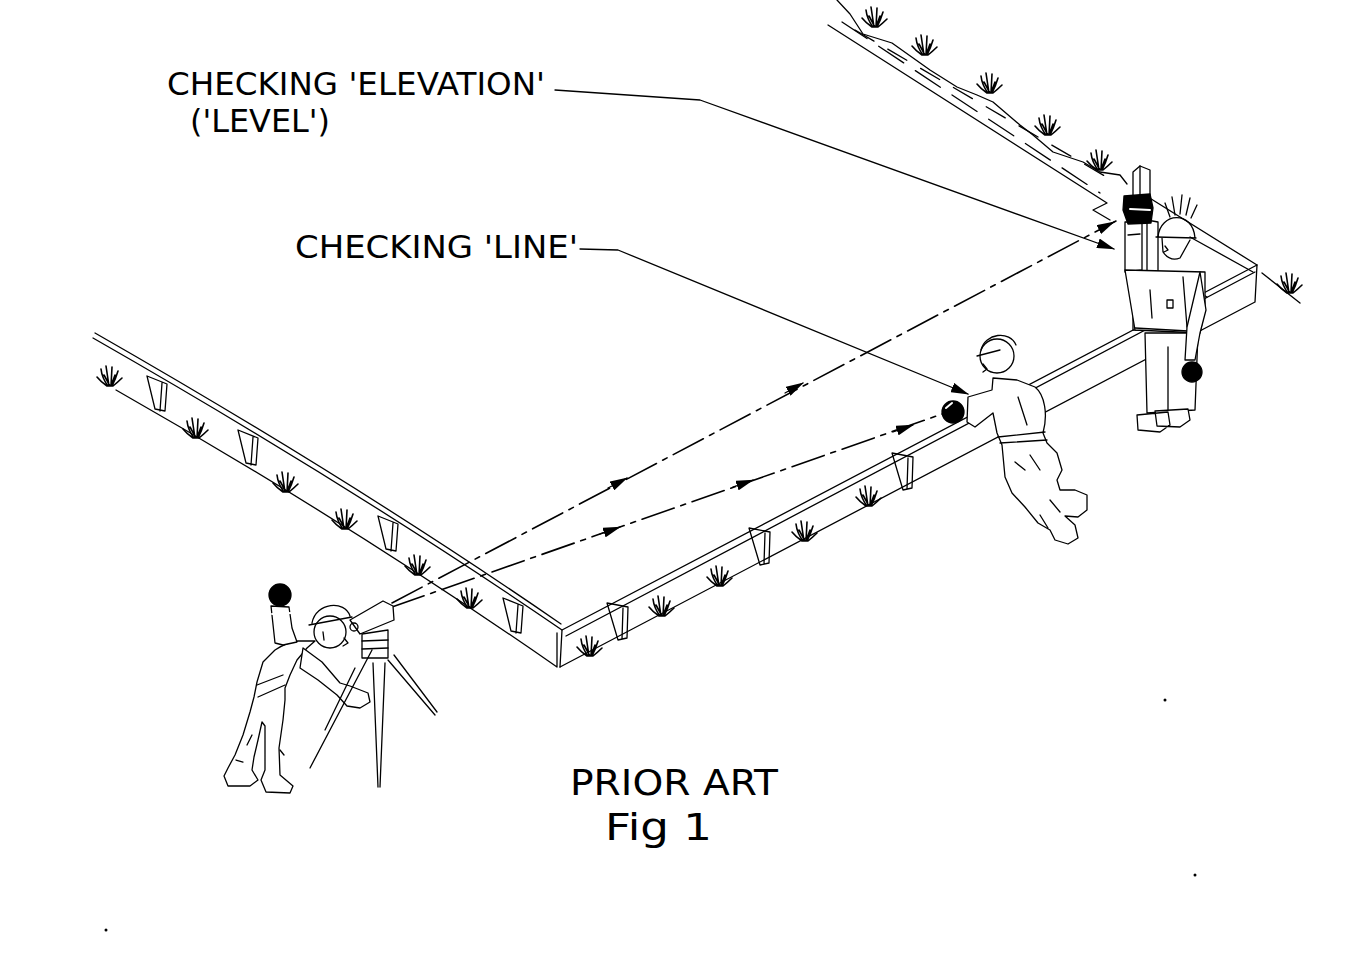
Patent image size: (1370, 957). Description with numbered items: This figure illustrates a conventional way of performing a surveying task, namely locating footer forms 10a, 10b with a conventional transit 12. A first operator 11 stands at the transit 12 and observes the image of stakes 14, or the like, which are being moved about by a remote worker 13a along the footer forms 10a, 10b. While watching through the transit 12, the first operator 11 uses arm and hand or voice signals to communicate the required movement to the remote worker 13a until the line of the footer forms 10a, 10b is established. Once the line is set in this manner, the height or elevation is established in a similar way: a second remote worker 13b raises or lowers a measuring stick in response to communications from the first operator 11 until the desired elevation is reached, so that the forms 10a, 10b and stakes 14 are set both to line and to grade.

The footer form 10a is at (695, 597).
The footer form 10b is at (367, 500).
The first operator 11 is at (258, 663).
The conventional transit 12 is at (398, 630).
The remote worker 13a is at (1062, 462).
The remote worker 13b is at (1212, 345).
The stakes 14 is at (240, 467).